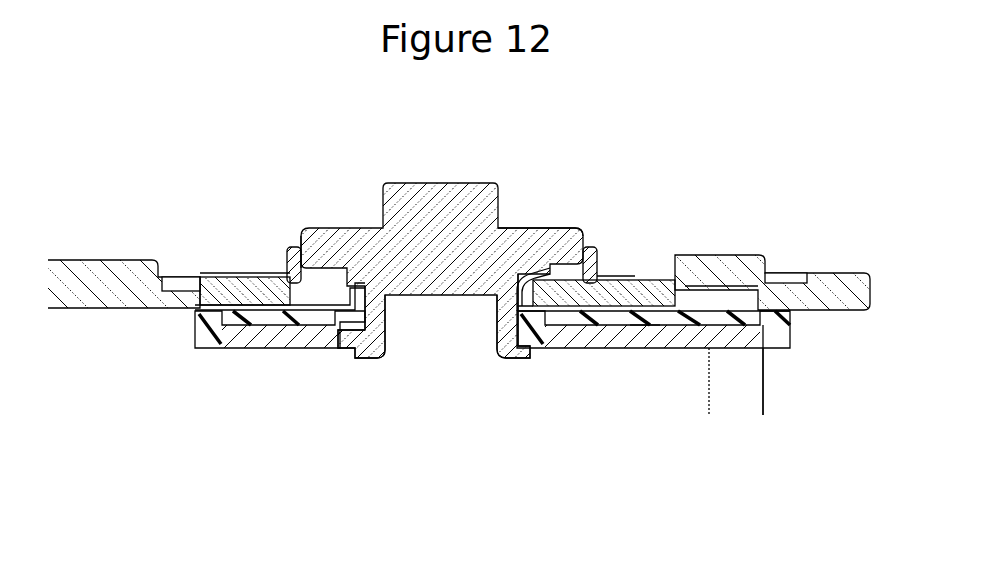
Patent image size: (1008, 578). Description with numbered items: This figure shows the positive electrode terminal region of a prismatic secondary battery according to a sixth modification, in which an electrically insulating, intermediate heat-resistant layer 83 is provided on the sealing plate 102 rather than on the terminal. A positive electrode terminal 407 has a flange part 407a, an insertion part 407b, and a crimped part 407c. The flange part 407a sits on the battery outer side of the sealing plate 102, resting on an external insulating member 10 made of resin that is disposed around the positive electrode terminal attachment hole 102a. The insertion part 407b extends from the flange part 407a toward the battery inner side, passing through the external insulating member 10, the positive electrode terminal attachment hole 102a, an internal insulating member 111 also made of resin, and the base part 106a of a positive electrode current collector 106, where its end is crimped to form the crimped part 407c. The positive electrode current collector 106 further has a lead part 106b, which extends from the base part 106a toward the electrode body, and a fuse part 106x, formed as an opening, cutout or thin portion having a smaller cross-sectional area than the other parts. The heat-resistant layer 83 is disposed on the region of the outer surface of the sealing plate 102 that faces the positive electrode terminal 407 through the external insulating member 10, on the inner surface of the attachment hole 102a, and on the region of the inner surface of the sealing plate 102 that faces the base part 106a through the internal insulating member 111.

The external insulating member 10 is at (590, 262).
The electrically insulating, intermediate heat-resistant layer 83 is at (313, 230).
The sealing plate 102 is at (833, 292).
The positive electrode terminal attachment hole 102a is at (320, 347).
The positive electrode current collector 106 is at (887, 422).
The base part 106a is at (222, 326).
The lead part 106b is at (737, 392).
The fuse part 106x is at (637, 334).
The internal insulating member 111 is at (268, 304).
The positive electrode terminal 407 is at (370, 226).
The flange part 407a is at (536, 228).
The insertion part 407b is at (390, 338).
The crimped part 407c is at (515, 359).